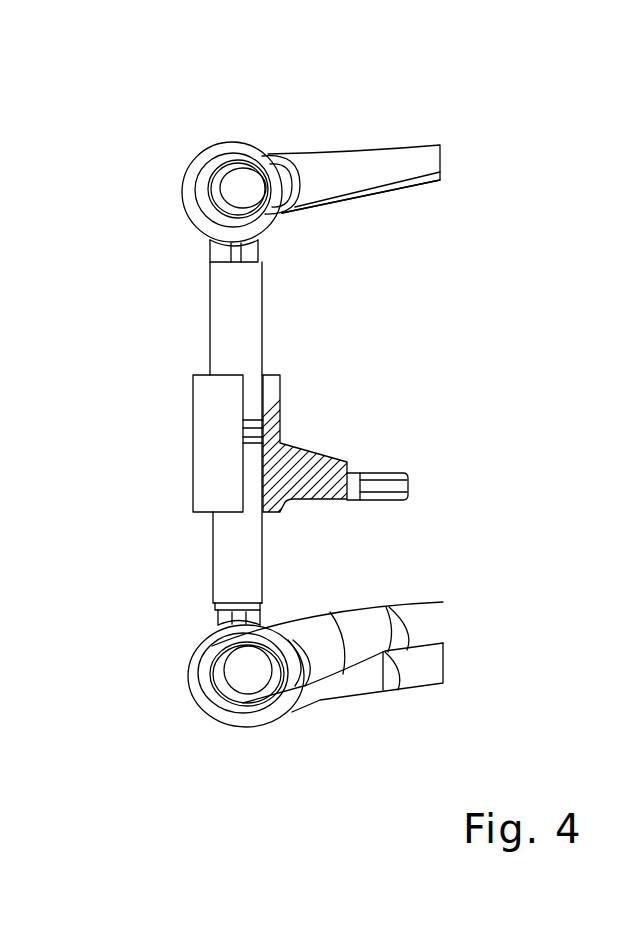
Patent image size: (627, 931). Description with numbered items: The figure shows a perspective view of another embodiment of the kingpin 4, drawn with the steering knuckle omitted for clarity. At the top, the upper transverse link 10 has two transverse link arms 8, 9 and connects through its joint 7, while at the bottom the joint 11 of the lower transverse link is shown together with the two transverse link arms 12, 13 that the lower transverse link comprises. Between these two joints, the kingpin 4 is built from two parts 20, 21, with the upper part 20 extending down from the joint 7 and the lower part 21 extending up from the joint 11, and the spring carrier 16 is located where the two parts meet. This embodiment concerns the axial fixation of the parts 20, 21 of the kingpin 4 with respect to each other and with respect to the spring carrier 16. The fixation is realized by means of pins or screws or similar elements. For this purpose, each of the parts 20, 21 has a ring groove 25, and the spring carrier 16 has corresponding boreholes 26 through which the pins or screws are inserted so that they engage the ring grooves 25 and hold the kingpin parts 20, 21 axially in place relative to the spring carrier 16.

The kingpin 4 is at (201, 543).
The joint of the upper transverse link 7 is at (181, 157).
The transverse link arm 8 is at (427, 180).
The transverse link arm 9 is at (432, 158).
The upper transverse link 10 is at (297, 136).
The joint of the lower transverse link 11 is at (285, 725).
The transverse link arm 12 is at (430, 624).
The transverse link arm 13 is at (423, 673).
The spring carrier 16 is at (263, 385).
The part of the kingpin 20 is at (222, 293).
The part of the kingpin 21 is at (227, 568).
The ring groove 25 is at (263, 405).
The borehole 26 is at (260, 422).